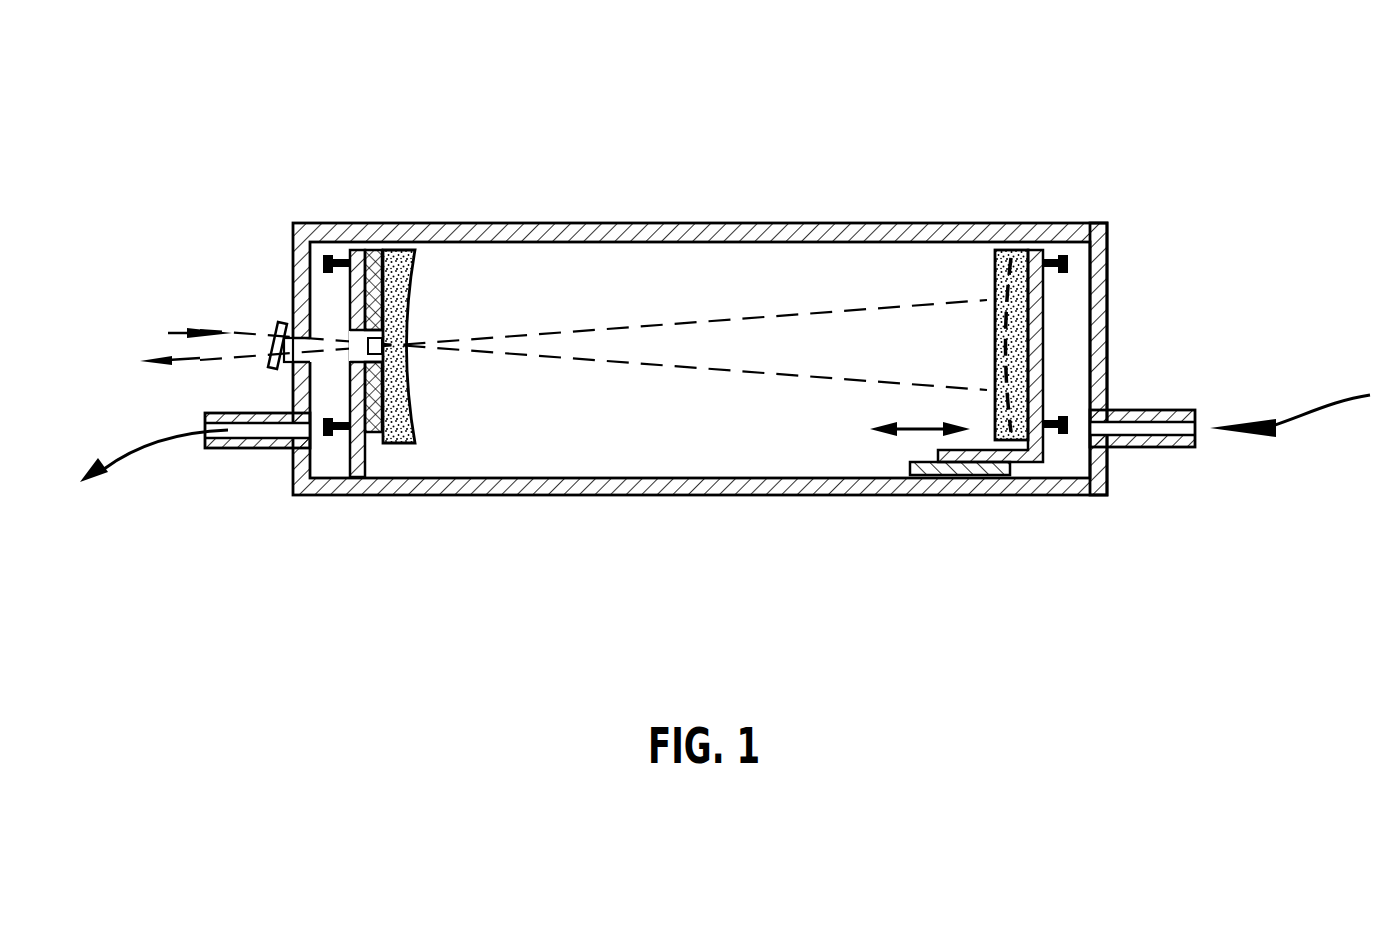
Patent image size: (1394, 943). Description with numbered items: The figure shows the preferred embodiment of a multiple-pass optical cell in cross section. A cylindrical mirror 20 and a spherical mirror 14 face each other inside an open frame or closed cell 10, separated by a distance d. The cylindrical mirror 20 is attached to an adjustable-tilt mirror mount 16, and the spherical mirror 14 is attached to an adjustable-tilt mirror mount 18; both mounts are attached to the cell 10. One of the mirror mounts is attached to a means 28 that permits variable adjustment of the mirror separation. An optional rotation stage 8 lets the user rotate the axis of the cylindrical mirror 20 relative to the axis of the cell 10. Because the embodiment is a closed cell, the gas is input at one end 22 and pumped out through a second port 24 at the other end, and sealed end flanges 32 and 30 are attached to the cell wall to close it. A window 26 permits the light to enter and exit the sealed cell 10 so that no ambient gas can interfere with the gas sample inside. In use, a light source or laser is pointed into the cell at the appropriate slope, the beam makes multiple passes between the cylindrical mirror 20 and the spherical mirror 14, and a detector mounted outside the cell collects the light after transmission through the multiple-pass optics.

The closed cell 10 is at (725, 348).
The sealed end flange 30 is at (293, 222).
The sealed end flange 32 is at (1122, 288).
The rotation stage 8 is at (368, 253).
The adjustable-tilt mirror mount 16 is at (360, 477).
The cylindrical mirror 20 is at (413, 452).
The window 26 is at (272, 322).
The second port 24 is at (237, 452).
The spherical mirror 14 is at (987, 267).
The adjustable-tilt mirror mount 18 is at (1050, 440).
The means to permit variable adjustment of the mirror separation 28 is at (960, 468).
The gas input end 22 is at (1185, 450).